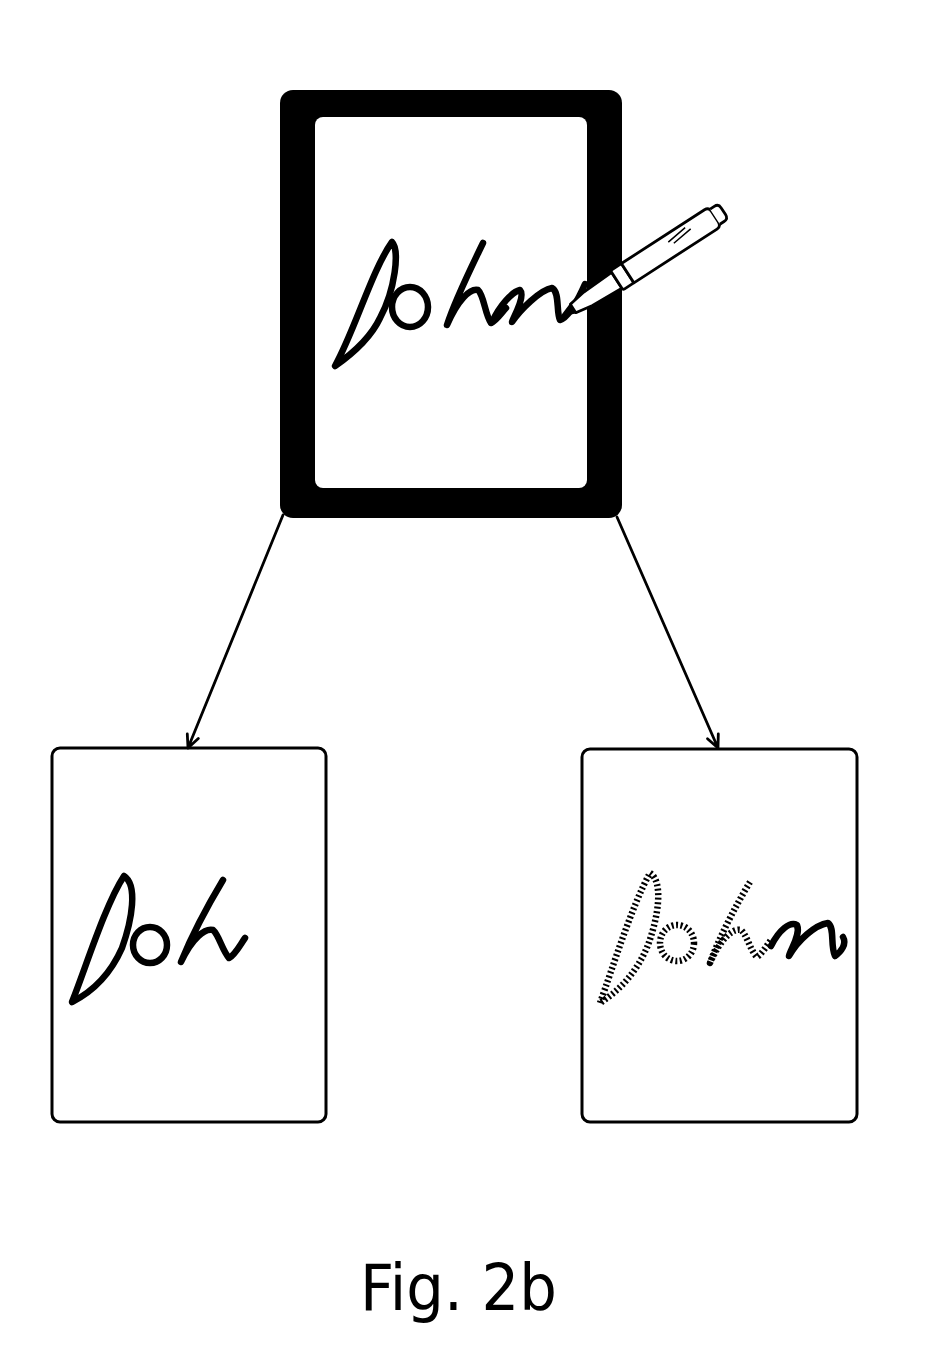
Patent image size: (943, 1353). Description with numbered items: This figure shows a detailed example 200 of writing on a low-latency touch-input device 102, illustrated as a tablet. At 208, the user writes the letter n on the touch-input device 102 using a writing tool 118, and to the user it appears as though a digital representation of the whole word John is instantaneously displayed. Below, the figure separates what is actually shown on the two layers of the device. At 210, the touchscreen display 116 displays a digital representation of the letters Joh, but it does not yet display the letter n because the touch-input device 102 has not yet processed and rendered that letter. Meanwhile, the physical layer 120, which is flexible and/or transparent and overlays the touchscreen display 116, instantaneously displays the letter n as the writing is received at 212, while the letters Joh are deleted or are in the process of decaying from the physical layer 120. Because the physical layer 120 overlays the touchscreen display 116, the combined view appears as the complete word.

The detailed examples of writing on touch-input device 200 is at (147, 55).
The low-latency touch-input device 102 is at (290, 90).
The writing of the letter n 208 is at (430, 232).
The writing tool 118 is at (725, 206).
The touchscreen display 116 is at (62, 748).
The display of digital representation of letters Joh 210 is at (180, 848).
The physical layer 120 is at (590, 750).
The instantaneous display of the letter n on physical layer 212 is at (698, 884).